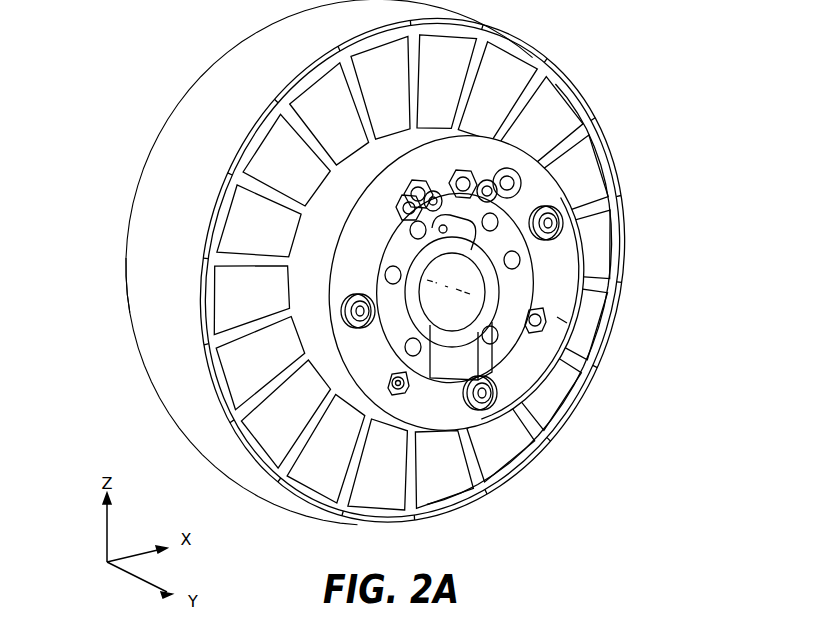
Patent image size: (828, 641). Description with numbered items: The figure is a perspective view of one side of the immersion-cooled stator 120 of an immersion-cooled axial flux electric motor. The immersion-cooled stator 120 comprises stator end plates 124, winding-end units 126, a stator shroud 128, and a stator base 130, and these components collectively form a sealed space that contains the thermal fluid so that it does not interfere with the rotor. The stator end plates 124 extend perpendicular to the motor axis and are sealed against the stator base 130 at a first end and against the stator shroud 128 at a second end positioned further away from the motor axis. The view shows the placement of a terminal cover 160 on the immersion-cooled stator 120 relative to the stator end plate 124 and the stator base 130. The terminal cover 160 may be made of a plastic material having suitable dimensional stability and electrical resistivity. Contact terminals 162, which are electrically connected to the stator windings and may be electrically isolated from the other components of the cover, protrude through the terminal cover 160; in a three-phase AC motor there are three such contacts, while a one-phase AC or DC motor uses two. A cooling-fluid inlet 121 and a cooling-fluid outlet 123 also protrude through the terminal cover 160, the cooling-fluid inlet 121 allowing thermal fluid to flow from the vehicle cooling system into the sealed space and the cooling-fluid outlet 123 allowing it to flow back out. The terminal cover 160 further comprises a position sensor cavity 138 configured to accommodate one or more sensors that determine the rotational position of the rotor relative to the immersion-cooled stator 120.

The immersion-cooled stator 120 is at (188, 63).
The cooling-fluid inlet 121 is at (413, 177).
The cooling-fluid outlet 123 is at (457, 167).
The stator end plate 124 is at (205, 270).
The winding-end units 126 is at (225, 303).
The stator shroud 128 is at (170, 190).
The stator base 130 is at (460, 345).
The position sensor cavity 138 is at (452, 262).
The terminal cover 160 is at (563, 267).
The contact terminals 162 is at (350, 313).